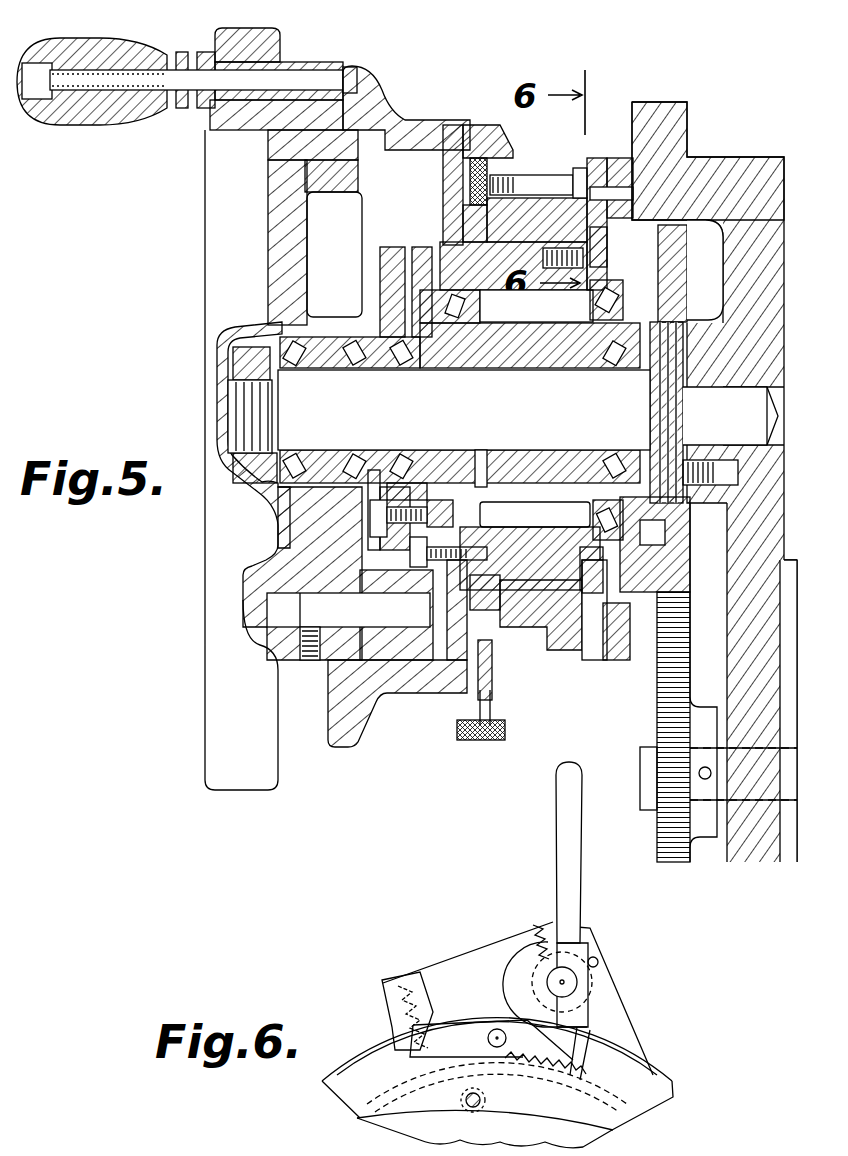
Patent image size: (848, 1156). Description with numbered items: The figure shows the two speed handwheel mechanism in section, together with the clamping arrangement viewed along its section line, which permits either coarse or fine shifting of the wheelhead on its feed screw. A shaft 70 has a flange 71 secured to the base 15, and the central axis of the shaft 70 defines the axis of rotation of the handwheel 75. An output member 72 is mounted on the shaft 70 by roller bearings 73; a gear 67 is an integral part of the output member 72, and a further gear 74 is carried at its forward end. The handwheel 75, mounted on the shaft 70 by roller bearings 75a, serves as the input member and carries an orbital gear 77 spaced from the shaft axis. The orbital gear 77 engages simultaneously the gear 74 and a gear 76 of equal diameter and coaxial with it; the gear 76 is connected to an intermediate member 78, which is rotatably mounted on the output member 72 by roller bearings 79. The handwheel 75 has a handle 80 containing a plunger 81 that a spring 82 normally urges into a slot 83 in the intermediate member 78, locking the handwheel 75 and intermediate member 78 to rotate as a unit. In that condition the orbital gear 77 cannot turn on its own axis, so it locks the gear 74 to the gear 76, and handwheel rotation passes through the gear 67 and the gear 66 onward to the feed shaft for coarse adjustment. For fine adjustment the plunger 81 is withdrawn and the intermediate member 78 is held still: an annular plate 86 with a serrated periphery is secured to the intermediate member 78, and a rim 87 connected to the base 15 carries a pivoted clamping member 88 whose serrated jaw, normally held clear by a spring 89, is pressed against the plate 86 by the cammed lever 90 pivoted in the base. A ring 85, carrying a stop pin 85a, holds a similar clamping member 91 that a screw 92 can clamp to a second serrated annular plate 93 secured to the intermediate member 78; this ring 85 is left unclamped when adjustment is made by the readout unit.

In FIG. 5, the base 15 is at (716, 165).
In FIG. 5, the gear 66 is at (690, 607).
In FIG. 5, the gear 67 is at (688, 300).
In FIG. 5, the shaft 70 is at (528, 410).
In FIG. 5, the flange 71 is at (686, 348).
In FIG. 5, the output member 72 is at (598, 347).
In FIG. 5, the roller bearings 73 is at (402, 372).
In FIG. 5, the gear 74 is at (385, 247).
In FIG. 5, the handwheel 75 is at (212, 205).
In FIG. 5, the roller bearings 75a is at (340, 372).
In FIG. 5, the gear 76 is at (416, 247).
In FIG. 5, the orbital gear 77 is at (400, 690).
In FIG. 5, the intermediate member 78 is at (378, 98).
In FIG. 5, the roller bearings 79 is at (588, 305).
In FIG. 5, the handle 80 is at (100, 125).
In FIG. 5, the plunger 81 is at (330, 70).
In FIG. 5, the spring 82 is at (185, 52).
In FIG. 5, the slot 83 is at (352, 72).
In FIG. 5, the ring 85 is at (560, 656).
In FIG. 5, the stop pin 85a is at (530, 175).
In FIG. 5, the annular plate 86 is at (582, 585).
In FIG. 6, the annular plate 86 is at (538, 1072).
In FIG. 5, the rim 87 is at (612, 157).
In FIG. 6, the rim 87 is at (655, 1068).
In FIG. 5, the clamping member 88 is at (586, 205).
In FIG. 6, the clamping member 88 is at (574, 1057).
In FIG. 6, the spring 89 is at (382, 994).
In FIG. 6, the cammed lever 90 is at (565, 828).
In FIG. 5, the clamping member 91 is at (506, 686).
In FIG. 5, the screw 92 is at (478, 741).
In FIG. 5, the annular plate 93 is at (498, 585).